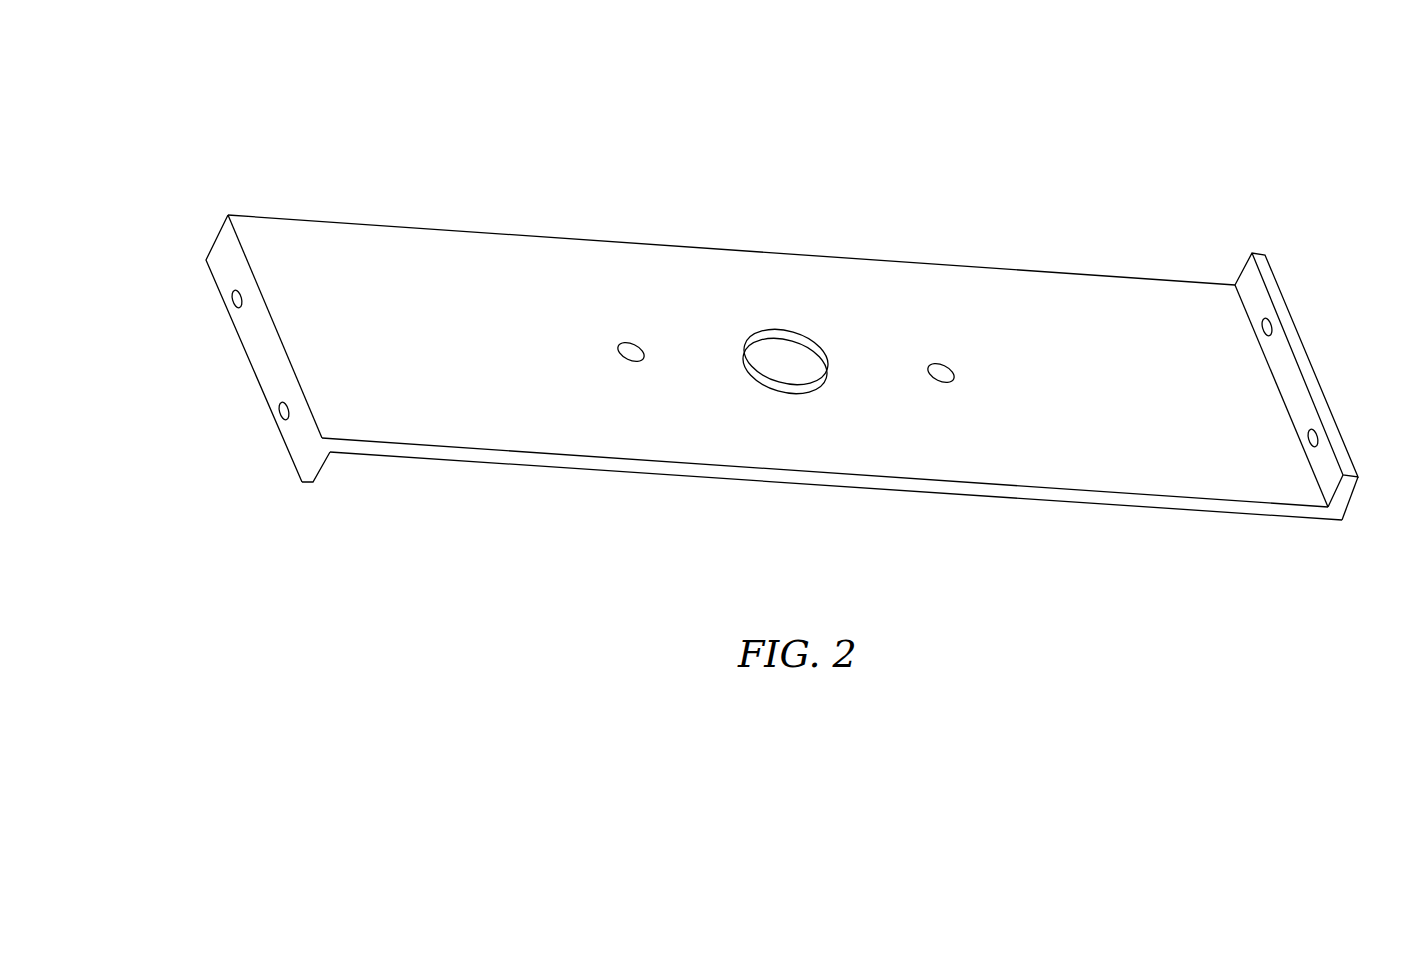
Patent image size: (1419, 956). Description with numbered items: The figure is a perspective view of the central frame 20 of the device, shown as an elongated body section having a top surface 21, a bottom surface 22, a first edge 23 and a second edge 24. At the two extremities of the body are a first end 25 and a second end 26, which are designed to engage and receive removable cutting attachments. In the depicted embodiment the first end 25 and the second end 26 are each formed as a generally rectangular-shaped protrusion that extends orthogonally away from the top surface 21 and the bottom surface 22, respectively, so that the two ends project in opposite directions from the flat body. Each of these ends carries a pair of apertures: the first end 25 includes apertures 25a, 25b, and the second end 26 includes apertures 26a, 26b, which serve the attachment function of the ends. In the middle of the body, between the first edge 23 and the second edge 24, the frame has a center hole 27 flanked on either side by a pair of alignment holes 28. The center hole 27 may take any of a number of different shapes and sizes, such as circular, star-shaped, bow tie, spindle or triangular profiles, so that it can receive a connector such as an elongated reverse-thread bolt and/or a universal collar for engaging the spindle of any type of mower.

The central frame 20 is at (242, 145).
The top surface 21 is at (707, 298).
The bottom surface 22 is at (955, 497).
The first edge 23 is at (751, 475).
The second edge 24 is at (1010, 270).
The first end 25 is at (1312, 362).
The aperture 25a is at (1262, 326).
The aperture 25b is at (1308, 436).
The second end 26 is at (265, 357).
The aperture 26a is at (232, 298).
The aperture 26b is at (279, 412).
The center hole 27 is at (792, 363).
The alignment holes 28 is at (629, 348).